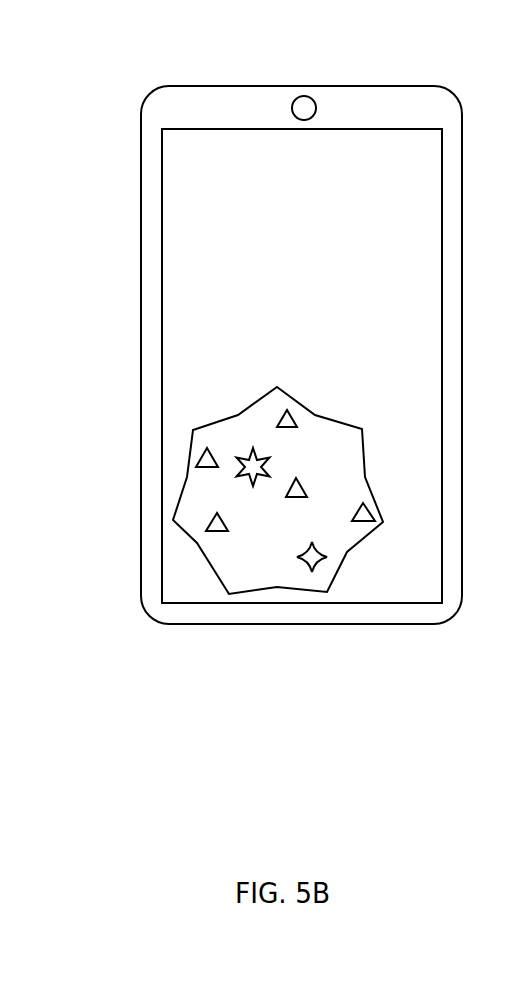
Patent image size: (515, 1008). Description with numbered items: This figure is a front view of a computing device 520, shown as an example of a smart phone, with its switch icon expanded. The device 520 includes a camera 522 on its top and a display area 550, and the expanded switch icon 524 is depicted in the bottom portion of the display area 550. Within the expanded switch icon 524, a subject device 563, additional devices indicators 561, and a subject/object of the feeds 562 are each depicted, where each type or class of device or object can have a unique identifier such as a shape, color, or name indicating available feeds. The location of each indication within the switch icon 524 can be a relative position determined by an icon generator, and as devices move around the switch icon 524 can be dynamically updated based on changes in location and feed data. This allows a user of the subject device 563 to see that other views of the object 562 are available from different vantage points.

The computing device 520 is at (141, 125).
The camera 522 is at (304, 95).
The display area 550 is at (386, 134).
The switch icon 524 is at (193, 429).
The additional devices indicators 561 is at (218, 466).
The subject/object of the feeds 562 is at (253, 470).
The subject device 563 is at (312, 560).